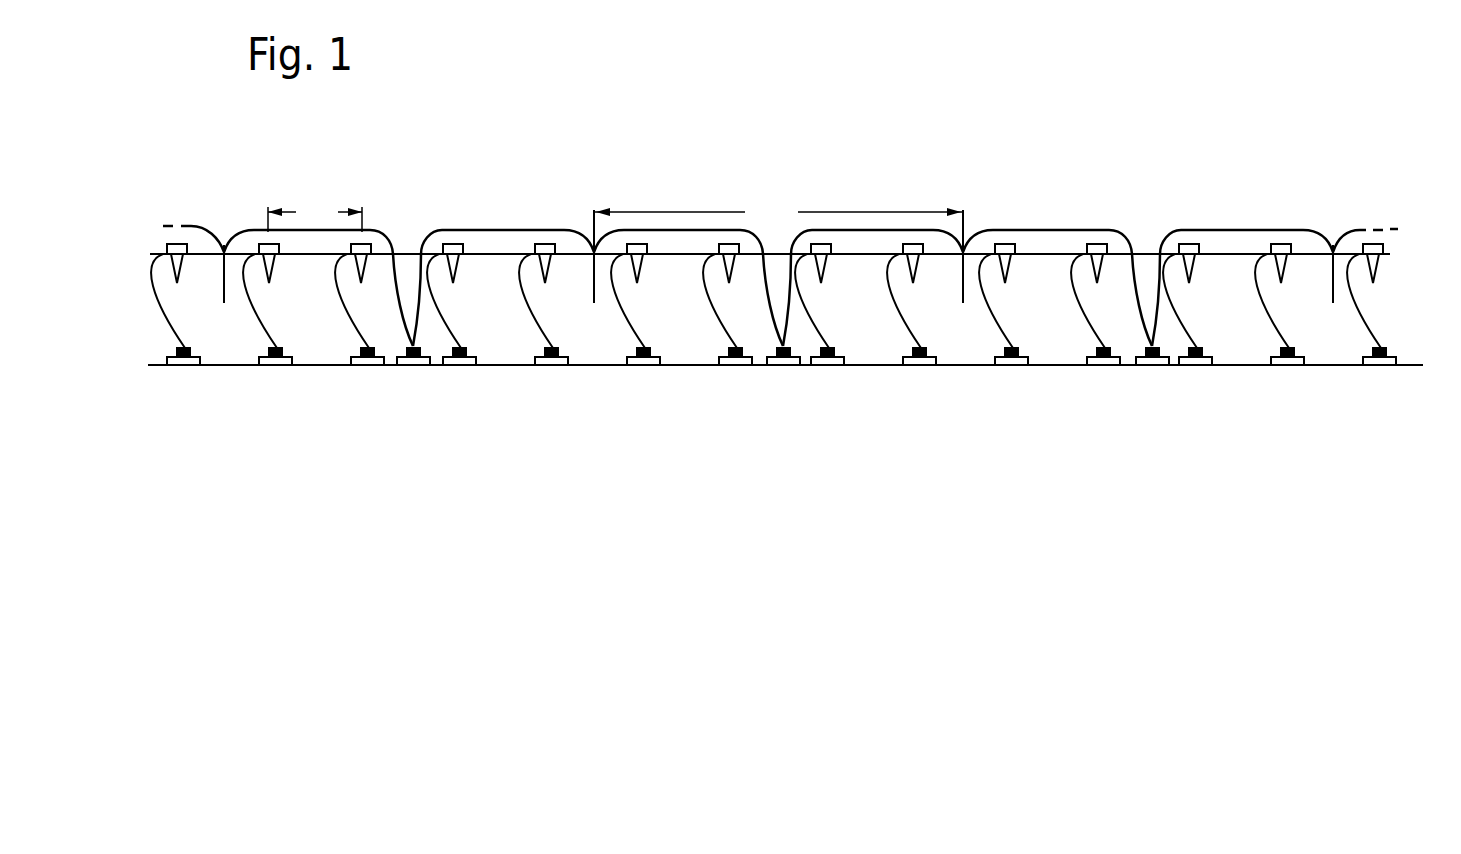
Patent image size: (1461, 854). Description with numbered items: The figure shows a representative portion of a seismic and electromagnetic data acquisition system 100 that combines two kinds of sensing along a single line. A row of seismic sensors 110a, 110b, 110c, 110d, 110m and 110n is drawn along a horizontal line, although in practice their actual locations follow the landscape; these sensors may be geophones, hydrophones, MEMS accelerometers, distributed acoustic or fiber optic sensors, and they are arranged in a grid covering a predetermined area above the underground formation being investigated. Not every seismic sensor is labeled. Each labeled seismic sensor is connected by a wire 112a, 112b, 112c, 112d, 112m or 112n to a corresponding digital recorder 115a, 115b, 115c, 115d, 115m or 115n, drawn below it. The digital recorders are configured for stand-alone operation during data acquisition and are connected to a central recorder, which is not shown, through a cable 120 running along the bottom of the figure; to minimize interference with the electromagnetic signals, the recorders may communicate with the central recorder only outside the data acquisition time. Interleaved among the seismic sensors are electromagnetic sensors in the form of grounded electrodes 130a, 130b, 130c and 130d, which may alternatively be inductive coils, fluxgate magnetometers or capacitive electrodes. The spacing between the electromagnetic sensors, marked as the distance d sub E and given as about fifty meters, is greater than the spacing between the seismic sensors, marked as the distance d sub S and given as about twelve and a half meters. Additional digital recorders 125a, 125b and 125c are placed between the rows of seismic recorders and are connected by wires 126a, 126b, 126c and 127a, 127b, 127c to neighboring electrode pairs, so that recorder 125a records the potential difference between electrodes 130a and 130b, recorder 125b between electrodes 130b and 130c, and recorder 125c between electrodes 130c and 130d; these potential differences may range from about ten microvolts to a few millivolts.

The seismic and electromagnetic data acquisition system 100 is at (812, 98).
The seismic sensor 110a is at (173, 247).
The seismic sensor 110b is at (272, 255).
The seismic sensor 110c is at (363, 245).
The seismic sensor 110d is at (453, 245).
The seismic sensor 110m is at (1275, 245).
The seismic sensor 110n is at (1380, 250).
The wire 112a is at (163, 300).
The wire 112b is at (265, 312).
The wire 112c is at (358, 312).
The wire 112d is at (458, 312).
The wire 112m is at (1268, 297).
The wire 112n is at (1377, 310).
The digital recorder 115a is at (185, 368).
The digital recorder 115b is at (275, 368).
The digital recorder 115c is at (368, 368).
The digital recorder 115d is at (468, 370).
The digital recorder 115m is at (1288, 358).
The digital recorder 115n is at (1380, 358).
The cable 120 is at (868, 367).
The digital recorder 125a is at (417, 370).
The digital recorder 125b is at (784, 372).
The digital recorder 125c is at (1152, 366).
The wire 126a is at (256, 224).
The wire 126b is at (773, 325).
The wire 126c is at (1100, 232).
The wire 127a is at (443, 232).
The wire 127b is at (870, 232).
The wire 127c is at (1193, 230).
The grounded electrode 130a is at (225, 230).
The grounded electrode 130b is at (590, 230).
The grounded electrode 130c is at (968, 230).
The grounded electrode 130d is at (1336, 230).